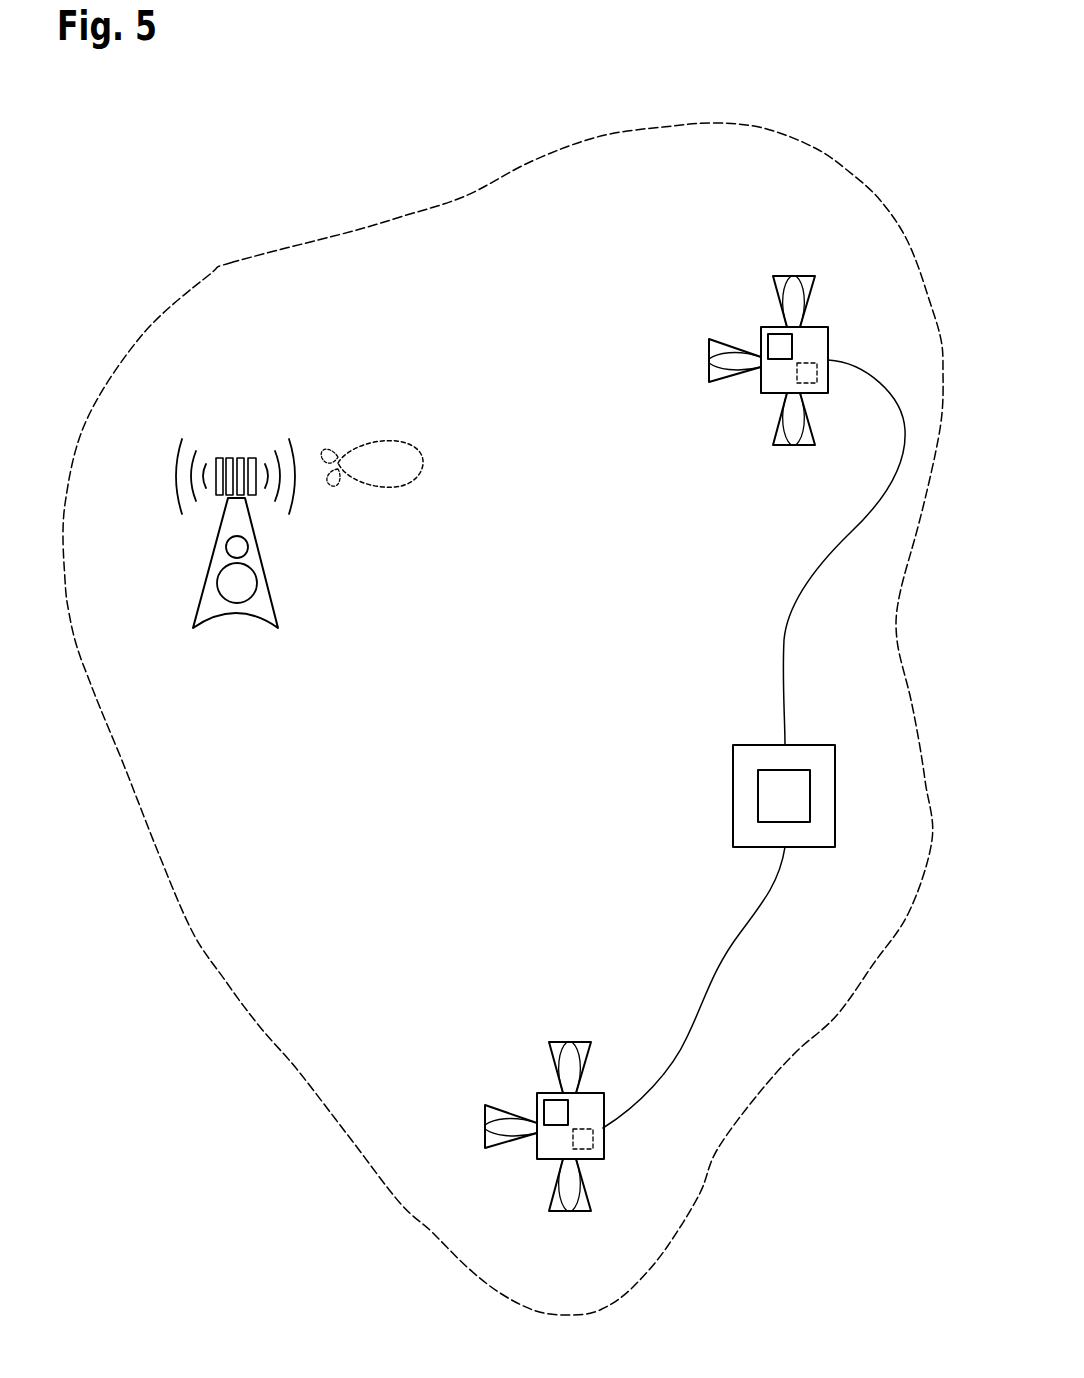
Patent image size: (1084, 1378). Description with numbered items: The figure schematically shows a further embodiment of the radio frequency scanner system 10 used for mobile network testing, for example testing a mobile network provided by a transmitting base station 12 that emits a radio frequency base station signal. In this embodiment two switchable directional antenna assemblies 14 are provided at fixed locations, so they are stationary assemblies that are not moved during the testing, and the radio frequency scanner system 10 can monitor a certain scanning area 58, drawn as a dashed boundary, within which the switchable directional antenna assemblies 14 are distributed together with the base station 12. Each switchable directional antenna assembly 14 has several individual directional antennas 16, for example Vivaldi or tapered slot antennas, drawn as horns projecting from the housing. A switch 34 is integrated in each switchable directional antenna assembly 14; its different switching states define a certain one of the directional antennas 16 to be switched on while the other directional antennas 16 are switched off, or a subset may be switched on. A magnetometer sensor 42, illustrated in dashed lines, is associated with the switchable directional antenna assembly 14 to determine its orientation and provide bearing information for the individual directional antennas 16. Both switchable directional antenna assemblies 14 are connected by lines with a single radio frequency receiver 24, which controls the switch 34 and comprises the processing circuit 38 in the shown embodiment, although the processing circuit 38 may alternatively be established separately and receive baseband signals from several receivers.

The radio frequency scanner system 10 is at (298, 202).
The base station 12 is at (210, 567).
The switchable directional antenna assembly 14 is at (660, 800).
The directional antenna 16 is at (618, 750).
The radio frequency receiver 24 is at (822, 745).
The switch 34 is at (653, 683).
The processing circuit 38 is at (810, 792).
The magnetometer sensor 42 is at (711, 814).
The scanning area 58 is at (397, 220).